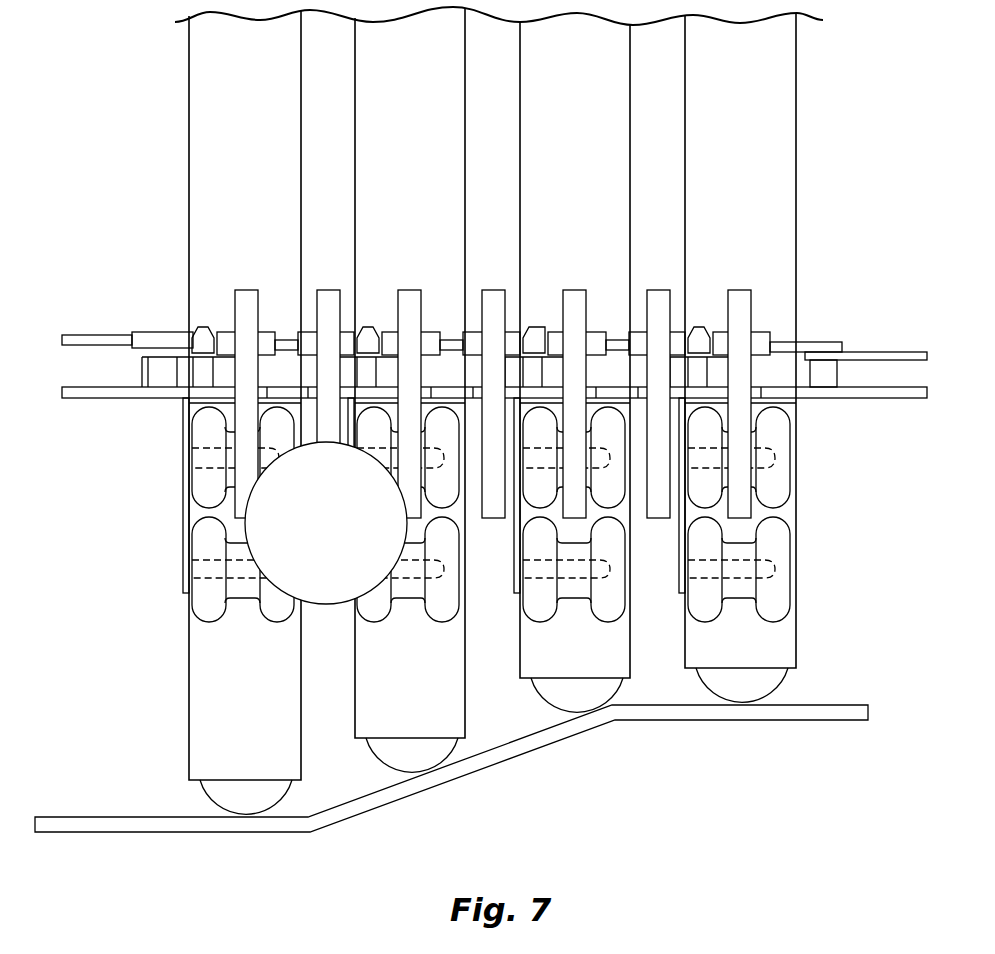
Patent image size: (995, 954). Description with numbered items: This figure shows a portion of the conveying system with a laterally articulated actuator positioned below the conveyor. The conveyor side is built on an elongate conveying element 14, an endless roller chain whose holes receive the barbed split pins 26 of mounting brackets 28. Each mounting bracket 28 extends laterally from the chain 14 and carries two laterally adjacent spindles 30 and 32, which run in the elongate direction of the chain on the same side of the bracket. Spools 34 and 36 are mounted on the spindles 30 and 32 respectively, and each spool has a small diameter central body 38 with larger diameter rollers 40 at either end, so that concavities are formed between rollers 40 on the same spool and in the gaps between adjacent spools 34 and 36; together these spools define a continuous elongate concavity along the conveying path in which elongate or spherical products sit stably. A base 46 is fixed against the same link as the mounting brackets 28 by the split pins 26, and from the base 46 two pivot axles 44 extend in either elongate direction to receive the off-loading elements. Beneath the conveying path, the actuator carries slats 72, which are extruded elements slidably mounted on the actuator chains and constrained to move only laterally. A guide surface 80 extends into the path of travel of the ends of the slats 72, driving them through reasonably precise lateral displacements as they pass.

The slats 72 is at (797, 198).
The elongate conveying element 14 is at (870, 355).
The barbed split pins 26 is at (202, 326).
The pivot axles 44 is at (157, 332).
The base 46 is at (712, 330).
The mounting brackets 28 is at (183, 512).
The spindle 30 is at (190, 462).
The spindle 32 is at (190, 572).
The spool 34 is at (792, 452).
The spool 36 is at (792, 570).
The small diameter central body 38 is at (737, 603).
The rollers 40 is at (690, 620).
The guide surface 80 is at (520, 740).